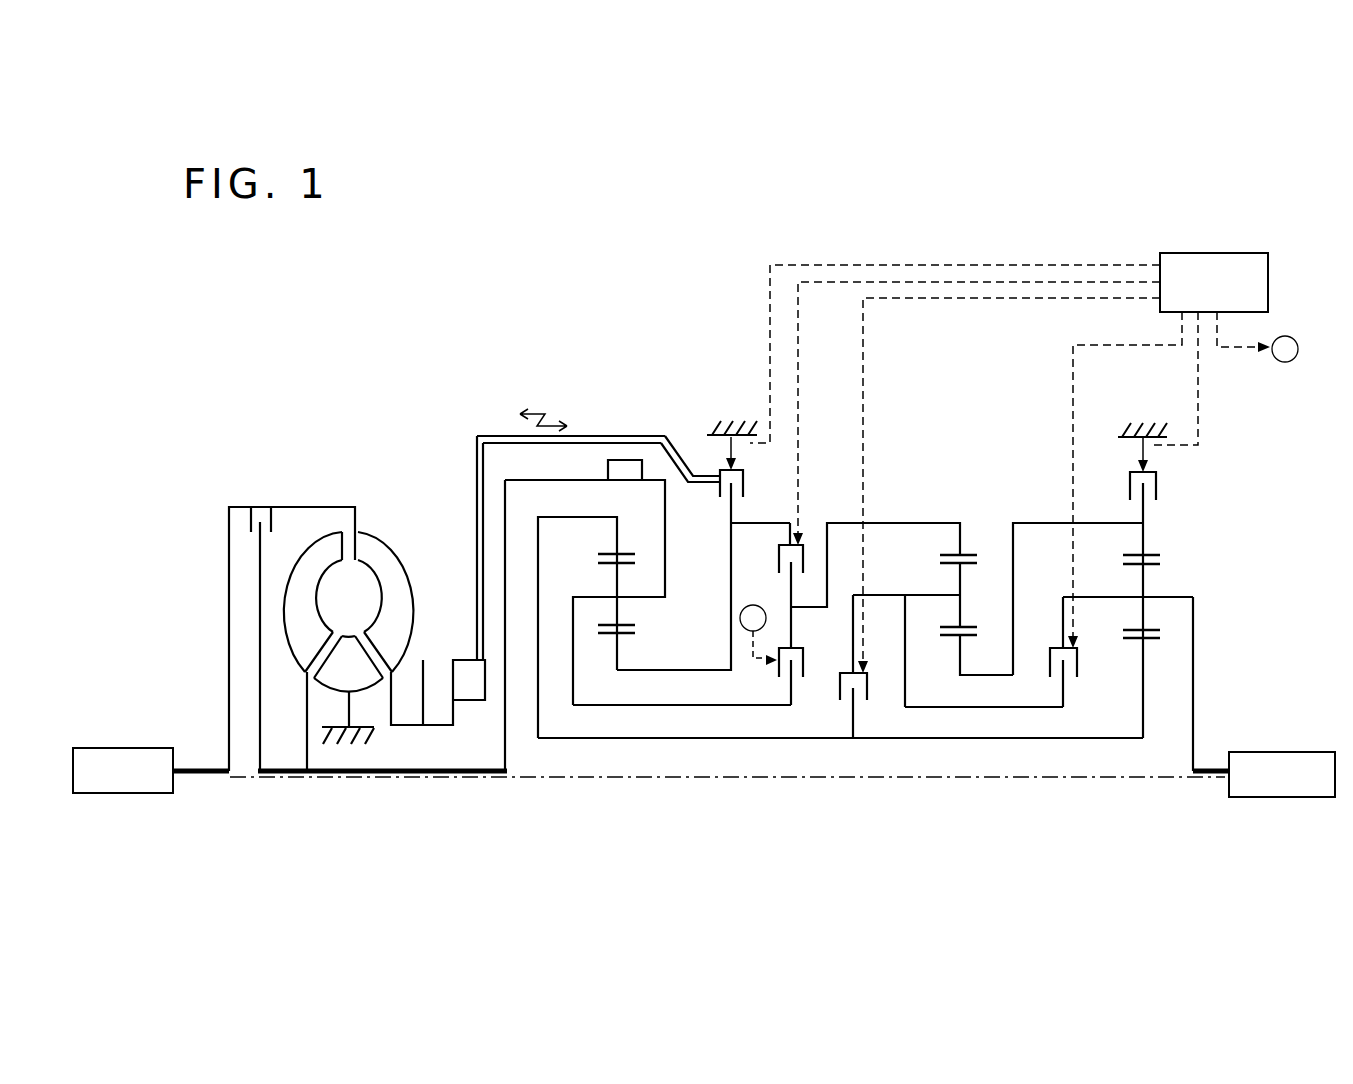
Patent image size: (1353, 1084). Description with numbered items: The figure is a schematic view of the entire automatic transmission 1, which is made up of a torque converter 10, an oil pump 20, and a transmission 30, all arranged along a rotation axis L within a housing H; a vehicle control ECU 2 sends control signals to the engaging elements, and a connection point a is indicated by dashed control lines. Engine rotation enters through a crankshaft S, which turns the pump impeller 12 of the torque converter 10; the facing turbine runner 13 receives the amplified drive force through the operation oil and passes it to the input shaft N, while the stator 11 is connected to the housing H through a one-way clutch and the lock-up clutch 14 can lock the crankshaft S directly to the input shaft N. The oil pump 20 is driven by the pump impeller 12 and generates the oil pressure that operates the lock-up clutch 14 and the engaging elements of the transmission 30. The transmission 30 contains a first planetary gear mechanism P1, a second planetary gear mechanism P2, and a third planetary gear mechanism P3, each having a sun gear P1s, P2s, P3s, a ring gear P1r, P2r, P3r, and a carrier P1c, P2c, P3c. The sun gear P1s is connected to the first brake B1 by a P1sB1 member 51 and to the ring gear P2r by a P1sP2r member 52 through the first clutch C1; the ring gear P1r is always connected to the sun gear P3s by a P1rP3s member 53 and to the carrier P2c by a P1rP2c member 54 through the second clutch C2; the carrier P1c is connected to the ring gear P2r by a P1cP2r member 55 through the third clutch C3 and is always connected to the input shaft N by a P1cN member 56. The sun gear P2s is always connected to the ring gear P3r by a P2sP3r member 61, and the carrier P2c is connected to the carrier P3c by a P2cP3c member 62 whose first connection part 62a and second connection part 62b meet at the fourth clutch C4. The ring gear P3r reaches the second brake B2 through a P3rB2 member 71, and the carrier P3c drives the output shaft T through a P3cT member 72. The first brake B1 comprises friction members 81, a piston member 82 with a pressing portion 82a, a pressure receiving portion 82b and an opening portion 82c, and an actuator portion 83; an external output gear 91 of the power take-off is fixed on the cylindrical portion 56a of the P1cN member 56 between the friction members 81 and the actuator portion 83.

The automatic transmission 1 is at (327, 324).
The vehicle control ECU 2 is at (1242, 253).
The torque converter 10 is at (269, 473).
The stator 11 is at (378, 690).
The pump impeller 12 is at (378, 540).
The turbine runner 13 is at (312, 546).
The lock-up clutch 14 is at (248, 522).
The oil pump 20 is at (448, 752).
The transmission 30 is at (641, 270).
The P1sB1 member 51 is at (668, 675).
The P1sP2r member 52 is at (932, 522).
The P1rP3s member 53 is at (884, 740).
The P1rP2c member 54 is at (882, 595).
The P1cP2r member 55 is at (716, 707).
The P1cN member 56 is at (507, 674).
The cylindrical portion 56a is at (590, 479).
The P2sP3r member 61 is at (1042, 522).
The P2cP3c member 62 is at (1070, 840).
The first connection part 62a is at (992, 710).
The second connection part 62b is at (1048, 690).
The P3rB2 member 71 is at (1150, 512).
The P3cT member 72 is at (1197, 640).
The friction members 81 is at (719, 494).
The piston member 82 is at (480, 318).
The pressing portion 82a is at (510, 433).
The pressure receiving portion 82b is at (475, 512).
The opening portion 82c is at (617, 440).
The actuator portion 83 is at (465, 658).
The external output gear 91 is at (666, 446).
The first brake B1 is at (720, 470).
The second brake B2 is at (1173, 480).
The first clutch C1 is at (805, 560).
The second clutch C2 is at (804, 680).
The third clutch C3 is at (840, 698).
The fourth clutch C4 is at (1078, 678).
The housing H is at (745, 420).
The first planetary gear mechanism P1 is at (646, 668).
The ring gear of the first planetary gear mechanism P1r is at (606, 555).
The carrier of the first planetary gear mechanism P1c is at (632, 597).
The sun gear of the first planetary gear mechanism P1s is at (616, 645).
The second planetary gear mechanism P2 is at (942, 710).
The ring gear of the second planetary gear mechanism P2r is at (966, 555).
The carrier of the second planetary gear mechanism P2c is at (958, 595).
The sun gear of the second planetary gear mechanism P2s is at (962, 640).
The third planetary gear mechanism P3 is at (1165, 668).
The ring gear of the third planetary gear mechanism P3r is at (1148, 557).
The carrier of the third planetary gear mechanism P3c is at (1180, 598).
The sun gear of the third planetary gear mechanism P3s is at (1140, 650).
The crankshaft S is at (208, 768).
The output shaft T is at (1220, 760).
The rotation axis L is at (322, 780).
The input shaft N is at (482, 780).
The connection point a is at (1019, 500).